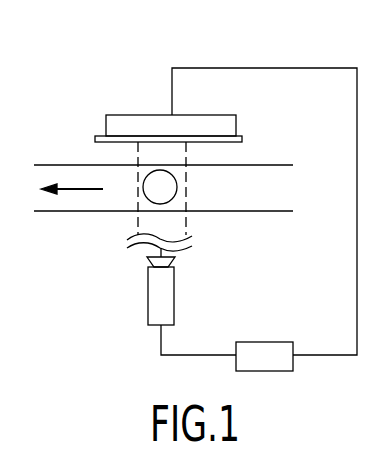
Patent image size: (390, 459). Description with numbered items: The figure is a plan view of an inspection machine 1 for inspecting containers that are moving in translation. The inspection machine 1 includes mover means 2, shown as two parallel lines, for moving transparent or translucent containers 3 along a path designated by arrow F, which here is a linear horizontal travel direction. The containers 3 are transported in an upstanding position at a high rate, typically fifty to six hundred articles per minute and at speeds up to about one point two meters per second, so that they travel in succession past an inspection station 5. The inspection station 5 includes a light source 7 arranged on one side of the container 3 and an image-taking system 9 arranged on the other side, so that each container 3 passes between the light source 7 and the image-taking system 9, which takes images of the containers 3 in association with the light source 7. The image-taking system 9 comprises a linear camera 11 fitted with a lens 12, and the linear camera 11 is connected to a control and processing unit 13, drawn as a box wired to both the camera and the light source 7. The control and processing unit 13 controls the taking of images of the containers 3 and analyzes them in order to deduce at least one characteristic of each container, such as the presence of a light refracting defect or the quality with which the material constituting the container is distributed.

The inspection machine 1 is at (61, 70).
The mover means 2 is at (273, 165).
The container 3 is at (178, 187).
The inspection station 5 is at (86, 278).
The light source 7 is at (190, 122).
The image-taking system 9 is at (195, 290).
The linear camera 11 is at (150, 313).
The lens 12 is at (176, 259).
The control and processing unit 13 is at (270, 348).
The arrow F is at (78, 186).